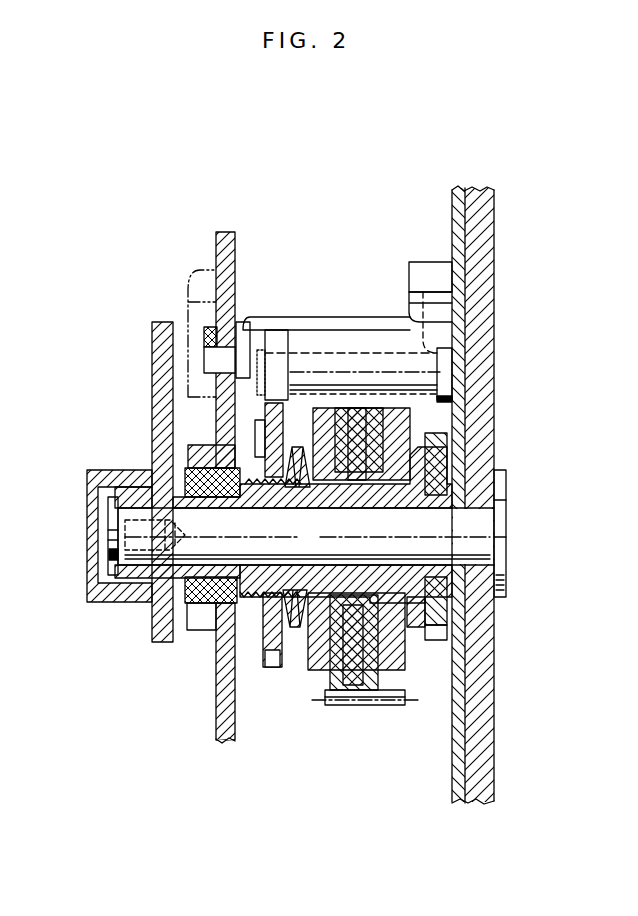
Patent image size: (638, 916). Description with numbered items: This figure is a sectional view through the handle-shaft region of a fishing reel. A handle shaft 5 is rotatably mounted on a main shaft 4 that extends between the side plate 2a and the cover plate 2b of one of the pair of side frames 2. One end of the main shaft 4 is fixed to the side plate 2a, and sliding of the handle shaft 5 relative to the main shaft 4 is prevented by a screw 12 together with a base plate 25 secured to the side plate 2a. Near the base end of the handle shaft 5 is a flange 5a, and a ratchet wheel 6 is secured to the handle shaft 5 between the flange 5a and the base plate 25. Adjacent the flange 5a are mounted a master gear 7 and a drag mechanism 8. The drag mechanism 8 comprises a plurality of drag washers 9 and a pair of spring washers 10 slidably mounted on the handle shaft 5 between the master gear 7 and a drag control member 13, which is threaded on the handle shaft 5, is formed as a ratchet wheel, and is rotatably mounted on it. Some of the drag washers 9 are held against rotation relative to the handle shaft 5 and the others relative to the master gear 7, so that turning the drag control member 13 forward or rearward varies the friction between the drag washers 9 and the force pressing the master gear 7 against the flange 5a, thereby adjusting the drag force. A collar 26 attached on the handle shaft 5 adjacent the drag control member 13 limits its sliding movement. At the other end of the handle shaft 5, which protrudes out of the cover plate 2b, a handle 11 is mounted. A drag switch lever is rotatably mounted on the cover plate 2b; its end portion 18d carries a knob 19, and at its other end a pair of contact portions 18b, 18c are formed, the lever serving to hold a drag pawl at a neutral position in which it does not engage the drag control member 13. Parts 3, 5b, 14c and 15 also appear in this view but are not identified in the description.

The side frames 2 is at (350, 814).
The side plate 2a is at (449, 789).
The cover plate 2b is at (227, 742).
The cap 3 is at (100, 598).
The main shaft 4 is at (470, 525).
The handle shaft 5 is at (397, 590).
The flange 5a is at (418, 455).
The hub block 5b is at (207, 578).
The ratchet wheel 6 is at (432, 632).
The master gear 7 is at (396, 680).
The drag mechanism 8 is at (275, 760).
The drag washers 9 is at (345, 698).
The spring washers 10 is at (302, 468).
The handle 11 is at (152, 371).
The screw 12 is at (118, 556).
The drag control member 13 is at (268, 633).
The guide member 14c is at (265, 408).
The pin shaft 15 is at (405, 380).
The contact portion 18b is at (438, 283).
The contact portion 18c is at (438, 320).
The end portion 18d is at (204, 335).
The knob 19 is at (200, 288).
The base plate 25 is at (497, 237).
The collar 26 is at (200, 632).